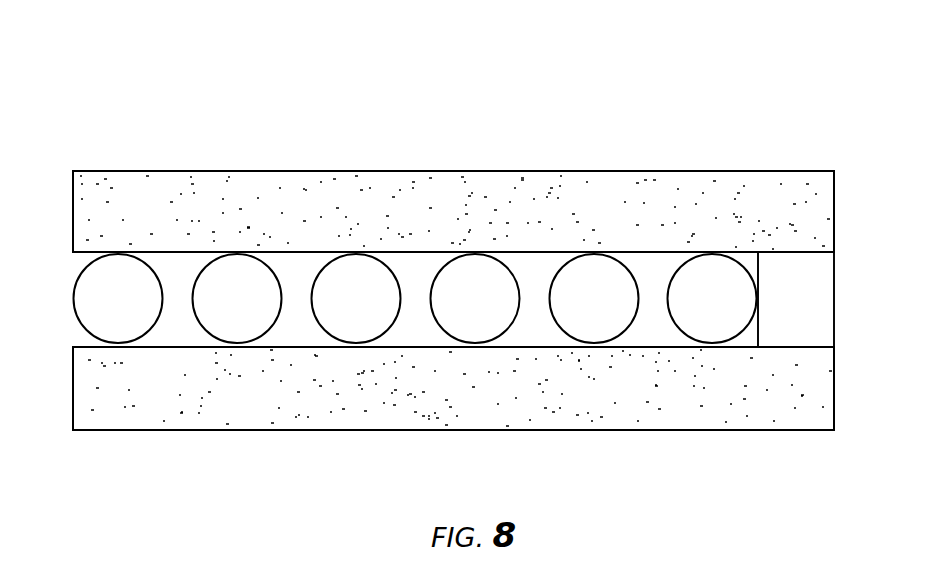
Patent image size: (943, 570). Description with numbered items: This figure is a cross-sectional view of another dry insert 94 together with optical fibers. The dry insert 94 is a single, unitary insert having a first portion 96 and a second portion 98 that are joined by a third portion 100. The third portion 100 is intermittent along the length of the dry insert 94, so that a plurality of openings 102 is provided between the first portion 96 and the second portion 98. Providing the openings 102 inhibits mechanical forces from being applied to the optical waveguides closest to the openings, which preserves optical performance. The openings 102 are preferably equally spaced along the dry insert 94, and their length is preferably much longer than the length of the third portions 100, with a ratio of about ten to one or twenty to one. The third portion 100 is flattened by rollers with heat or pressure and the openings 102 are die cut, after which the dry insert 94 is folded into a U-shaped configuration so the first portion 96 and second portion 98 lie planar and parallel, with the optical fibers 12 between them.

The dry insert 94 is at (773, 93).
The first portion 96 is at (590, 170).
The second portion 98 is at (732, 412).
The tubular core member 12 is at (73, 299).
The third portion 100 is at (825, 270).
The openings 102 is at (823, 304).